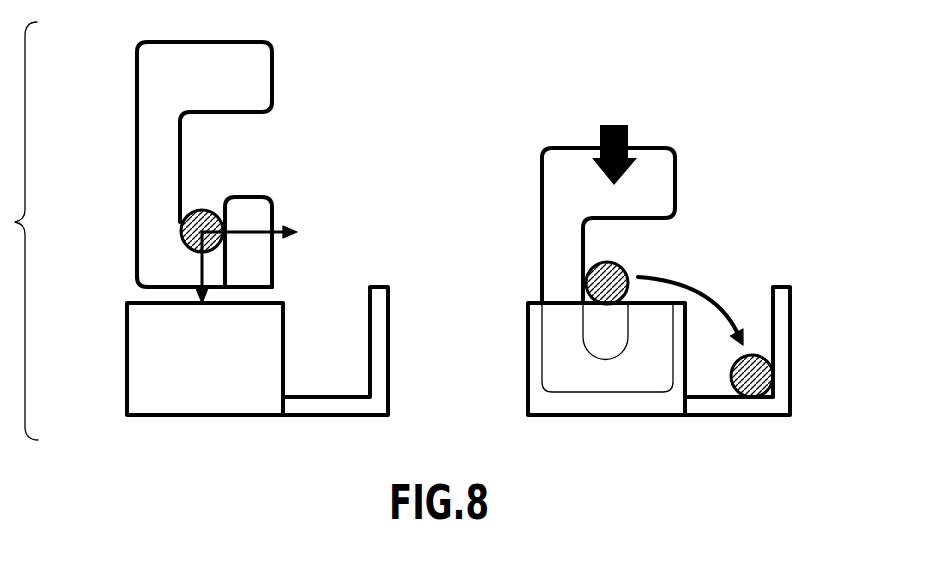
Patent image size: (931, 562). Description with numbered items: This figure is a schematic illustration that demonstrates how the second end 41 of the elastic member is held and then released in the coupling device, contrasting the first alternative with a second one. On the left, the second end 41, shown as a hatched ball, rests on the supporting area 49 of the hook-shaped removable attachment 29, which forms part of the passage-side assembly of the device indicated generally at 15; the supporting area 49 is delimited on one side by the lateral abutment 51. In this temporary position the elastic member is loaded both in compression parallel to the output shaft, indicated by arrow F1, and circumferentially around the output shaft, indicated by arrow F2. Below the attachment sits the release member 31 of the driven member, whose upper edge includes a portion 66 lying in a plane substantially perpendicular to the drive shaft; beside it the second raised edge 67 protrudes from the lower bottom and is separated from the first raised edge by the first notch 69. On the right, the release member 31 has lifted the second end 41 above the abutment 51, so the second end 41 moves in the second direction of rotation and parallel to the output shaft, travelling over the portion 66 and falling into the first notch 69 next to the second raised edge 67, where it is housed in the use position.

The passage 15 is at (211, 200).
The removable attachment 29 is at (137, 160).
The release member 31 is at (175, 380).
The second end 41 is at (186, 214).
The supporting area 49 is at (200, 252).
The lateral abutment 51 is at (255, 197).
The portion 66 is at (272, 302).
The second raised edge 67 is at (388, 347).
The first notch 69 is at (333, 315).
The arrow F1 is at (198, 273).
The arrow F2 is at (245, 236).